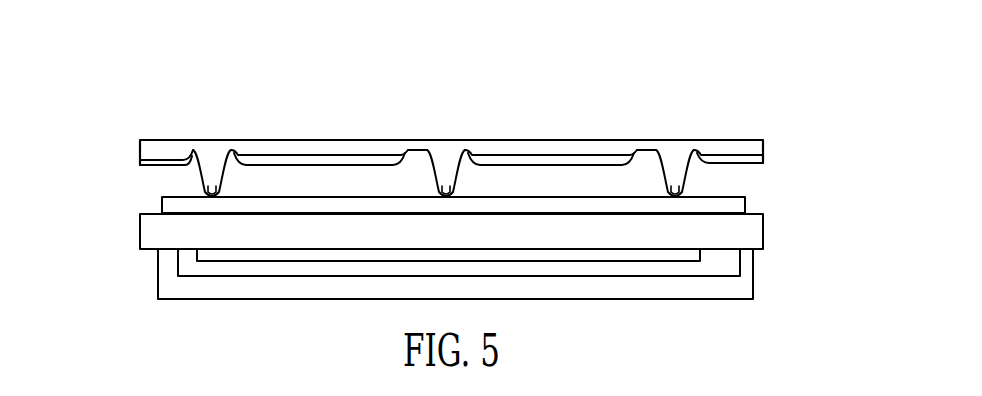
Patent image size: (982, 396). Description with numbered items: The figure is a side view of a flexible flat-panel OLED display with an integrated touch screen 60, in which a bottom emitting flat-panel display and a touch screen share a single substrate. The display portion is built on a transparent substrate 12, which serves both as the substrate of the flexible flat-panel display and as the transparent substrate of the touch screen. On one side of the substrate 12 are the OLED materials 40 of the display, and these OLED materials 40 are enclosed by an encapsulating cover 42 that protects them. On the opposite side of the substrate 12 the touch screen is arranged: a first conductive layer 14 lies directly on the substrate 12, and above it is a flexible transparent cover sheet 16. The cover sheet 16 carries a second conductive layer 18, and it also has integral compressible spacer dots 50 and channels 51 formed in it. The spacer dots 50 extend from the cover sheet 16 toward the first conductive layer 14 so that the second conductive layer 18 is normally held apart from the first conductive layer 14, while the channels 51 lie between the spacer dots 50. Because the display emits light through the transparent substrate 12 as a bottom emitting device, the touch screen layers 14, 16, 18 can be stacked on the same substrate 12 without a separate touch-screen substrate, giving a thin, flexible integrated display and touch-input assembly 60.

The flexible flat-panel OLED display with an integrated touch screen 60 is at (647, 88).
The compressible spacer dots 50 is at (208, 163).
The channels 51 is at (232, 156).
The flexible transparent cover sheet 16 is at (140, 148).
The second conductive layer 18 is at (763, 163).
The first conductive layer 14 is at (727, 203).
The transparent substrate 12 is at (140, 230).
The OLED materials 40 is at (697, 253).
The encapsulating cover 42 is at (158, 285).